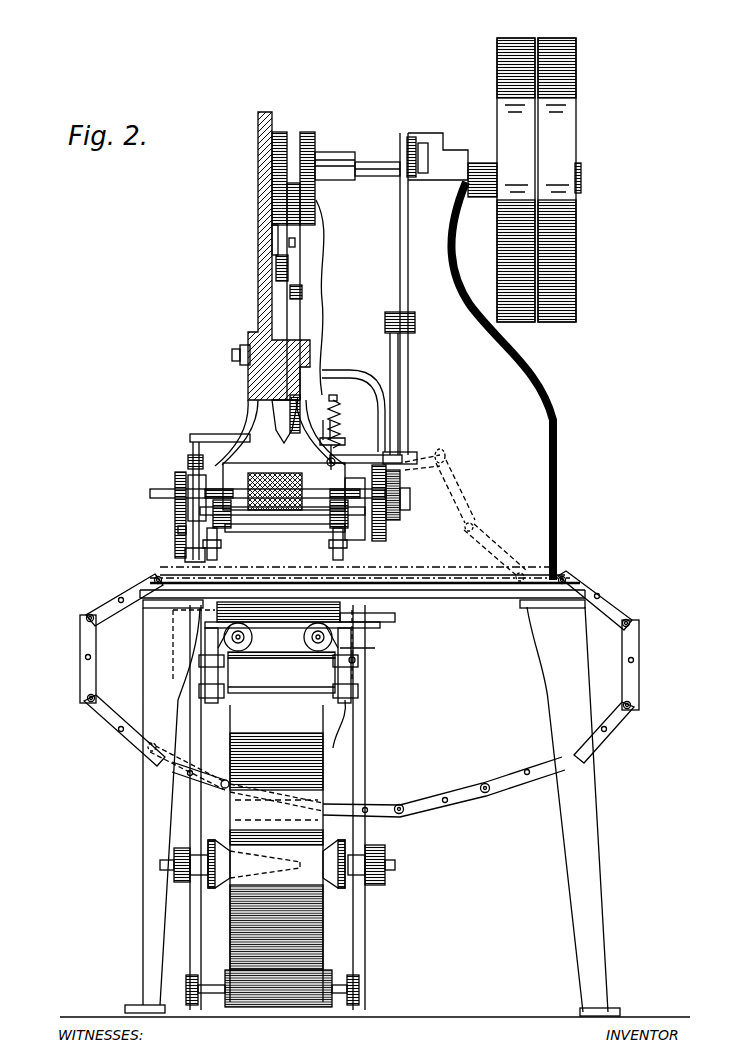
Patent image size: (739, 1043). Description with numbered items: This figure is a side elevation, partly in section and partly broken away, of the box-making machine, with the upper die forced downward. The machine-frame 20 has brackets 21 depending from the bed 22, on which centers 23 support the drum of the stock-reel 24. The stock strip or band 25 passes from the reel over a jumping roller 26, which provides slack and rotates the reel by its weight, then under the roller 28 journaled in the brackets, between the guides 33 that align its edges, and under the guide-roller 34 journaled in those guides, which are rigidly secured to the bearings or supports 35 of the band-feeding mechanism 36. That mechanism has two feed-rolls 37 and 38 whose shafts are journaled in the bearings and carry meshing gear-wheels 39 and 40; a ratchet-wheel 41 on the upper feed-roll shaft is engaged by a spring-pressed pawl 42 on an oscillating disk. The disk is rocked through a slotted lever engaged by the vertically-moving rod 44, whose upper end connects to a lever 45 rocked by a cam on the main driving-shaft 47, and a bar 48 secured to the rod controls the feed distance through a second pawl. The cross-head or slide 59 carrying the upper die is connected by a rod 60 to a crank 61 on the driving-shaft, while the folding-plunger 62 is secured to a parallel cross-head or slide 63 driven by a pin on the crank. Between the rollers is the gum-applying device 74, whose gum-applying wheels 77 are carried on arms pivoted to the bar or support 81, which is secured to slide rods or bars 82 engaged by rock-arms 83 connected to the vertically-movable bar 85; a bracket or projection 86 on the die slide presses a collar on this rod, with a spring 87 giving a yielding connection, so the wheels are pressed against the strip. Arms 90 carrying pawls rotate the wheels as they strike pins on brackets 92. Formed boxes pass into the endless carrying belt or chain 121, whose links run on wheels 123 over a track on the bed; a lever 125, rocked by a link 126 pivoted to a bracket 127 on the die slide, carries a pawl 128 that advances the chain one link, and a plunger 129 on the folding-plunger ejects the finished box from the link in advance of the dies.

The machine-frame 20 is at (522, 309).
The brackets 21 is at (366, 757).
The bed 22 is at (568, 578).
The centers 23 is at (224, 890).
The stock-reel 24 is at (334, 890).
The stock strip or band 25 is at (276, 853).
The jumping roller 26 is at (232, 1006).
The roller 28 is at (382, 621).
The guides 33 is at (213, 538).
The guide-roller 34 is at (267, 515).
The bearings or supports 35 is at (195, 512).
The band-feeding mechanism 36 is at (288, 511).
The feed-roll 37 is at (262, 477).
The feed-roll 38 is at (190, 560).
The gear-wheel 39 is at (188, 477).
The gear-wheel 40 is at (177, 531).
The ratchet-wheel 41 is at (392, 523).
The spring-pressed pawl 42 is at (382, 533).
The vertically-moving rod 44 is at (409, 296).
The lever 45 is at (410, 137).
The main driving-shaft 47 is at (373, 163).
The bar 48 is at (388, 359).
The cross-head or slide 59 is at (258, 270).
The rod 60 is at (300, 270).
The crank 61 is at (311, 132).
The folding-plunger 62 is at (250, 384).
The cross-head or slide 63 is at (257, 210).
The gum-applying device 74 is at (281, 647).
The gum-applying wheels 77 is at (278, 649).
The bar or support 81 is at (281, 675).
The slide rods or bars 82 is at (204, 640).
The rock-arms 83 is at (205, 690).
The vertically-movable bar 85 is at (335, 725).
The bracket or projection 86 is at (327, 412).
The spring 87 is at (341, 416).
The arms 90 is at (365, 658).
The brackets 92 is at (358, 650).
The endless carrying belt or chain 121 is at (370, 668).
The wheels 123 is at (96, 702).
The lever 125 is at (468, 503).
The link 126 is at (427, 461).
The bracket 127 is at (340, 460).
The pawl 128 is at (498, 558).
The plunger 129 is at (190, 438).